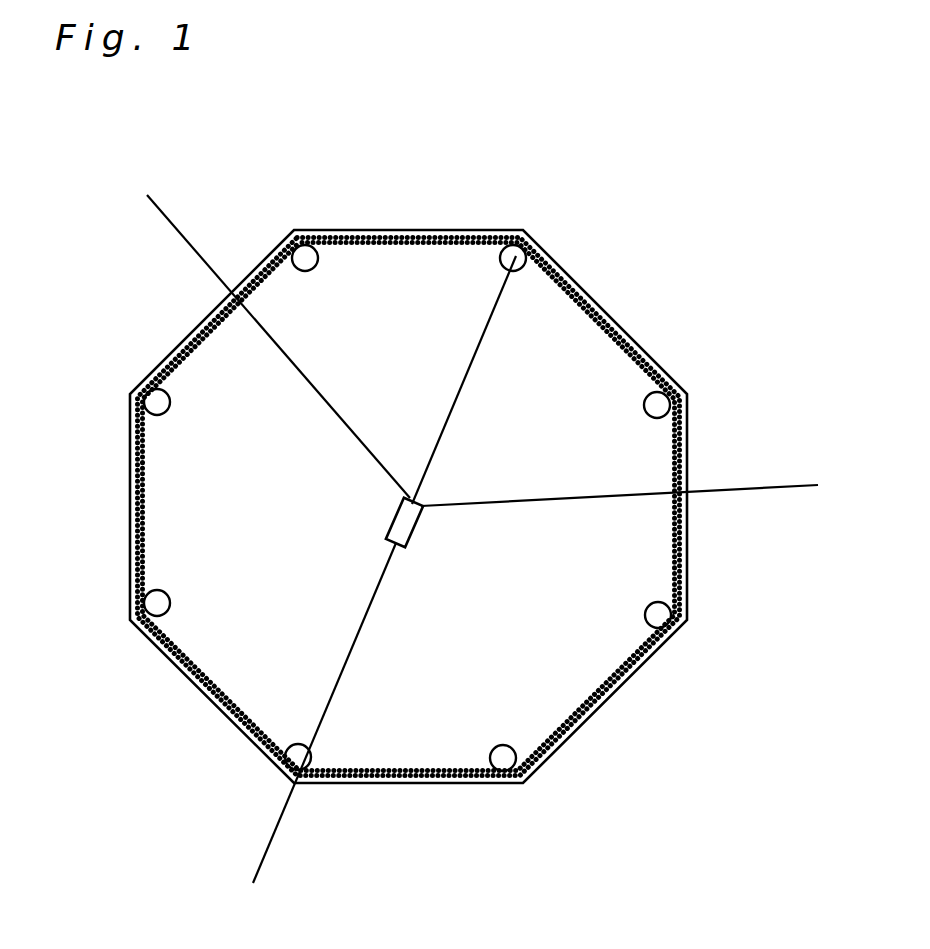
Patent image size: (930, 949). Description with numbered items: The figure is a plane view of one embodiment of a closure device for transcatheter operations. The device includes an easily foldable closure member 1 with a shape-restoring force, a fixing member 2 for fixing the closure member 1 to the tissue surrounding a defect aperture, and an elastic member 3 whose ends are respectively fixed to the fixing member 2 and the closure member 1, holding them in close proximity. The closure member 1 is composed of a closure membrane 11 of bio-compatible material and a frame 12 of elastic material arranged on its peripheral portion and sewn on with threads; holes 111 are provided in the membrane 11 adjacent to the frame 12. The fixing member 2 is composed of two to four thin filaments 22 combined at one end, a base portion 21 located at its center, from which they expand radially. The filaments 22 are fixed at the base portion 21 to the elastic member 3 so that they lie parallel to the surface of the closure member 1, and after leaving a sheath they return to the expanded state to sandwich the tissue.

The closure member 1 is at (481, 555).
The closure membrane 11 is at (598, 570).
The frame 12 is at (628, 682).
The holes 111 is at (503, 757).
The fixing member 2 is at (433, 505).
The base portion 21 is at (387, 540).
The filaments 22 is at (173, 218).
The elastic member 3 is at (480, 330).